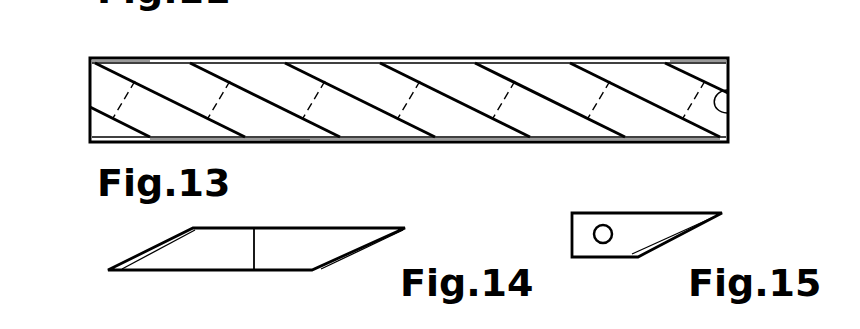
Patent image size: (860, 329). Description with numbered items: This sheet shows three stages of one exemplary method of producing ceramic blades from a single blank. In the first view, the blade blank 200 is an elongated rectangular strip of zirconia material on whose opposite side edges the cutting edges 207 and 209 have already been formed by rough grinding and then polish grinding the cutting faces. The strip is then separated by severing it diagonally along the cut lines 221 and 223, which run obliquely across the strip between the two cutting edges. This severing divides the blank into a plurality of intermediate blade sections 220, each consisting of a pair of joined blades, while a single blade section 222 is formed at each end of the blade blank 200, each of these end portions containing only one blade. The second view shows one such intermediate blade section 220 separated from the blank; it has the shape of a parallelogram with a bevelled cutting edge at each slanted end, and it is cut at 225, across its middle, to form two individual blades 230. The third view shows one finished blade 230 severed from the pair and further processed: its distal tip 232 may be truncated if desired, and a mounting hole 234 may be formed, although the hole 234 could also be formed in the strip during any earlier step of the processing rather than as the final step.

In FIG. 13, the blade blank 200 is at (424, 187).
In FIG. 13, the cutting edge 207 is at (417, 57).
In FIG. 13, the cutting edge 209 is at (292, 139).
In FIG. 13, the intermediate blade section 220 is at (242, 97).
In FIG. 14, the intermediate blade section 220 is at (178, 287).
In FIG. 13, the cut line 221 is at (219, 139).
In FIG. 13, the single blade section 222 is at (138, 97).
In FIG. 13, the cut line 223 is at (105, 126).
In FIG. 14, the cut 225 is at (258, 242).
In FIG. 14, the blade 230 is at (174, 253).
In FIG. 15, the blade 230 is at (670, 222).
In FIG. 15, the distal tip 232 is at (722, 215).
In FIG. 15, the mounting hole 234 is at (604, 225).